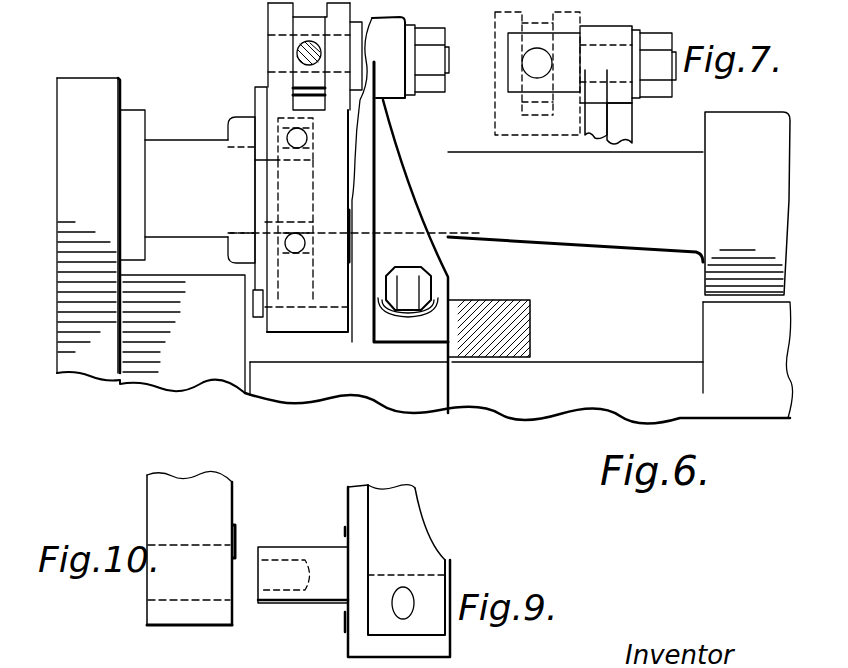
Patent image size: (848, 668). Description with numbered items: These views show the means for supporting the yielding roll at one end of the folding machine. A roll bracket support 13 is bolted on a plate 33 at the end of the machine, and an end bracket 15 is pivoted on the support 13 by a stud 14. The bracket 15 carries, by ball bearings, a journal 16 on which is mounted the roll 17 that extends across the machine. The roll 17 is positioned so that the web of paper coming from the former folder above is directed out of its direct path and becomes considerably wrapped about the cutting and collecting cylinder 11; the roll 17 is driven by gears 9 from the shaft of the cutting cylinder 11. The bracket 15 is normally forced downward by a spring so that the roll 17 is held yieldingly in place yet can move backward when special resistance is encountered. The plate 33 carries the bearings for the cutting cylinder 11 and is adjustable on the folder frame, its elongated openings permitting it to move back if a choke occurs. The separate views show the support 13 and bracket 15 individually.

In FIG. 6, the gears 9 is at (68, 234).
In FIG. 6, the cutting and collecting cylinder 11 is at (687, 320).
In FIG. 6, the roll bracket support 13 is at (395, 128).
In FIG. 7, the roll bracket support 13 is at (625, 118).
In FIG. 9, the roll bracket support 13 is at (408, 508).
In FIG. 6, the stud 14 is at (330, 354).
In FIG. 9, the stud 14 is at (292, 552).
In FIG. 6, the end bracket 15 is at (270, 78).
In FIG. 7, the end bracket 15 is at (500, 107).
In FIG. 10, the end bracket 15 is at (242, 455).
In FIG. 6, the journal 16 is at (612, 238).
In FIG. 6, the roll 17 is at (773, 192).
In FIG. 6, the plate 33 is at (372, 395).